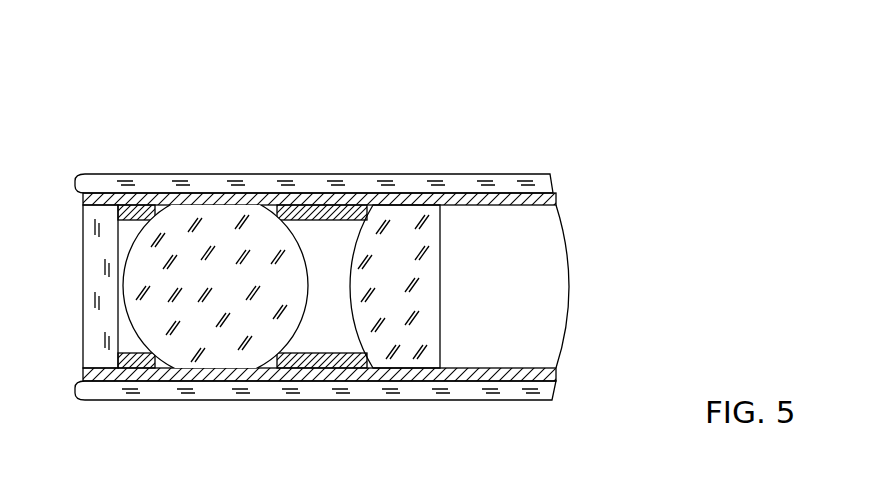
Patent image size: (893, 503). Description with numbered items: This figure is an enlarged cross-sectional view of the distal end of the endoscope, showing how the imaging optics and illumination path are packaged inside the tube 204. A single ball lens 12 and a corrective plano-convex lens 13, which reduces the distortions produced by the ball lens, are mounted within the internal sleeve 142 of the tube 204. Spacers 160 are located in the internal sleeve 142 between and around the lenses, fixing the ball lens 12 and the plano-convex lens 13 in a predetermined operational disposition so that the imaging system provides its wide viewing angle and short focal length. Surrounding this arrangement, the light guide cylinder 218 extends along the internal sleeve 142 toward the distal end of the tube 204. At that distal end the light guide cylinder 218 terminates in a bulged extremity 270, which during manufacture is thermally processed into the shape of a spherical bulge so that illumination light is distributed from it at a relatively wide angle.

The tube 204 is at (177, 105).
The ball lens 12 is at (194, 250).
The plano-convex lens 13 is at (405, 238).
The internal sleeve 142 is at (325, 198).
The spacers 160 is at (320, 360).
The light guide cylinder 218 is at (503, 182).
The bulged extremity 270 is at (78, 186).